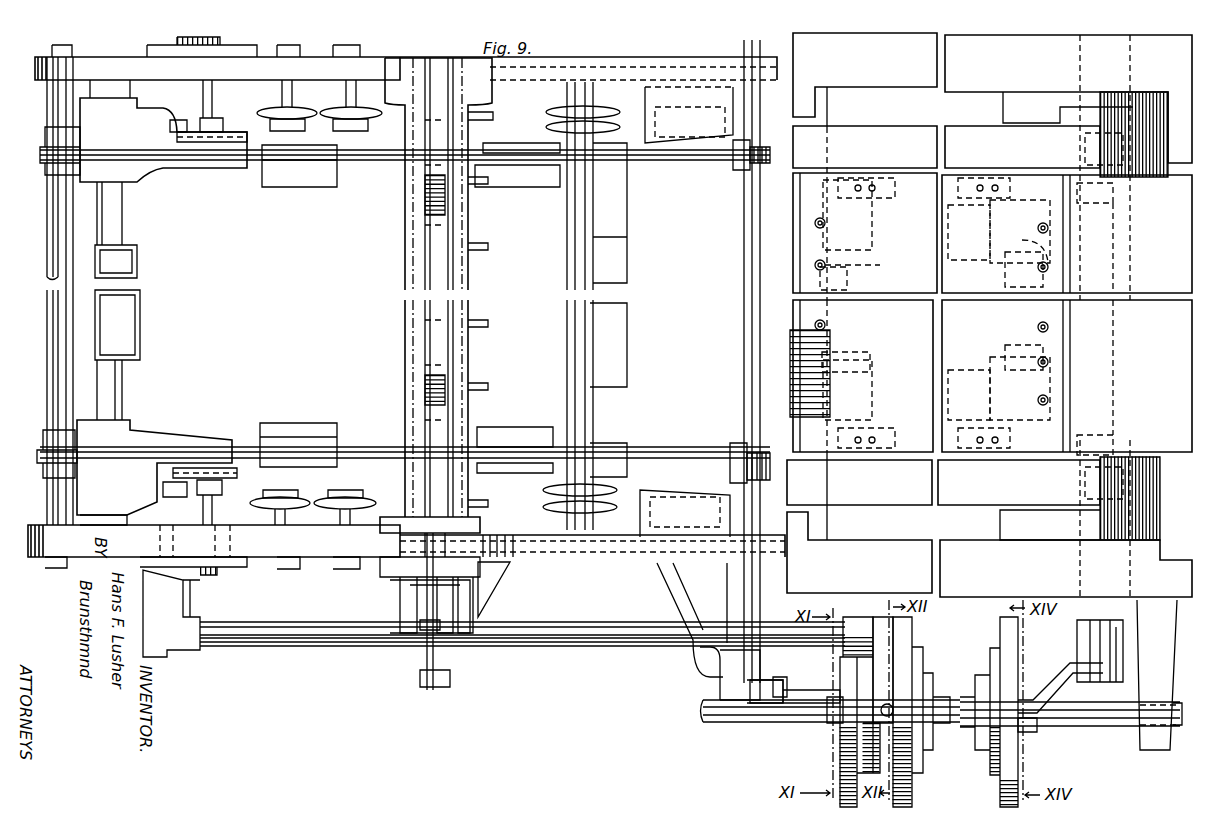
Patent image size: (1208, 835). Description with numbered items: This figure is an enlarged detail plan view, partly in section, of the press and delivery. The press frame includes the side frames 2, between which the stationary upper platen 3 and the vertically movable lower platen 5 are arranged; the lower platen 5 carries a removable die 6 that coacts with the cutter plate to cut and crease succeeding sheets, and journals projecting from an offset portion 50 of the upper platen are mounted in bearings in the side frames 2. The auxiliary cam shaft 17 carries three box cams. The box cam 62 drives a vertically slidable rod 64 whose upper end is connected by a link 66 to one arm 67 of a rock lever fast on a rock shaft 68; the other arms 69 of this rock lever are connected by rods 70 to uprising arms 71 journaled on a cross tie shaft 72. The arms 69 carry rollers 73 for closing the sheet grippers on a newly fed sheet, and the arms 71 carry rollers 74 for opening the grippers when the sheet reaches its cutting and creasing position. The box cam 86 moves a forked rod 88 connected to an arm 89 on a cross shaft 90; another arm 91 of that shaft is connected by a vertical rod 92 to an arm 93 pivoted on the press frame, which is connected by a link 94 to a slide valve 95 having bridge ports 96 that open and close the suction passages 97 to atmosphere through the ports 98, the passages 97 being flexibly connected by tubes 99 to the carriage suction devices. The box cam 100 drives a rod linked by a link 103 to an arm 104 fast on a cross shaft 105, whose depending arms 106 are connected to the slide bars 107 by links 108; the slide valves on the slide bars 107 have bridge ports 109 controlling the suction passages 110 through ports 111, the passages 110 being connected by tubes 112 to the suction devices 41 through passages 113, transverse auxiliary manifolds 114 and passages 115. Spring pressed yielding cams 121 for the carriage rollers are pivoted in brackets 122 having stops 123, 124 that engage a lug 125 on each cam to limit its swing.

The side frames 2 is at (989, 315).
The stationary upper platen 3 is at (943, 316).
The lower platen 5 is at (795, 410).
The removable die 6 is at (1067, 313).
The auxiliary cam shaft 17 is at (1120, 727).
The suction devices 41 is at (1040, 367).
The offset portion of the upper platen 50 is at (1100, 533).
The box cam 62 is at (840, 775).
The vertically slidable rod 64 is at (830, 718).
The link 66 is at (805, 688).
The arm of rock lever 67 is at (786, 670).
The rock shaft 68 is at (760, 612).
The arms of rock lever 69 is at (732, 470).
The rods 70 is at (400, 452).
The uprising arms 71 is at (62, 470).
The cross tie shaft 72 is at (80, 378).
The rollers 73 is at (735, 450).
The rollers 74 is at (66, 428).
The box cam 86 is at (910, 785).
The forked rod 88 is at (890, 710).
The arm 89 is at (883, 675).
The cross shaft 90 is at (650, 632).
The arm 91 is at (440, 687).
The vertical rod 92 is at (425, 660).
The arm 93 is at (418, 640).
The link 94 is at (423, 598).
The slide valve 95 is at (425, 482).
The bridge ports 96 is at (425, 390).
The suction passages 97 is at (425, 326).
The ports 98 is at (445, 398).
The tubes 99 is at (477, 330).
The box cam 100 is at (1003, 630).
The link 103 is at (1037, 728).
The arm 104 is at (1060, 690).
The cross shaft 105 is at (1115, 682).
The depending arms 106 is at (1090, 475).
The slide bars 107 is at (965, 210).
The links 108 is at (1080, 440).
The bridge ports 109 is at (965, 440).
The suction passages 110 is at (997, 435).
The ports 111 is at (978, 455).
The tubes 112 is at (995, 365).
The passages 113 is at (1030, 355).
The transverse auxiliary manifolds 114 is at (1043, 322).
The passages 115 is at (1043, 233).
The spring pressed yielding cams 121 is at (245, 470).
The bracket 122 is at (210, 510).
The stop 123 is at (215, 487).
The stop 124 is at (163, 488).
The lug 125 is at (180, 470).